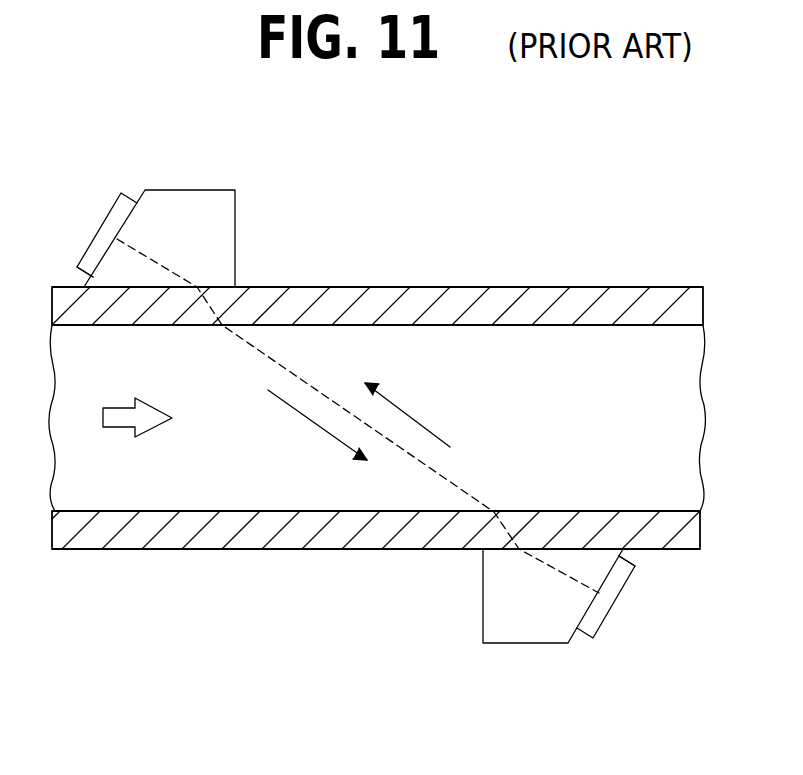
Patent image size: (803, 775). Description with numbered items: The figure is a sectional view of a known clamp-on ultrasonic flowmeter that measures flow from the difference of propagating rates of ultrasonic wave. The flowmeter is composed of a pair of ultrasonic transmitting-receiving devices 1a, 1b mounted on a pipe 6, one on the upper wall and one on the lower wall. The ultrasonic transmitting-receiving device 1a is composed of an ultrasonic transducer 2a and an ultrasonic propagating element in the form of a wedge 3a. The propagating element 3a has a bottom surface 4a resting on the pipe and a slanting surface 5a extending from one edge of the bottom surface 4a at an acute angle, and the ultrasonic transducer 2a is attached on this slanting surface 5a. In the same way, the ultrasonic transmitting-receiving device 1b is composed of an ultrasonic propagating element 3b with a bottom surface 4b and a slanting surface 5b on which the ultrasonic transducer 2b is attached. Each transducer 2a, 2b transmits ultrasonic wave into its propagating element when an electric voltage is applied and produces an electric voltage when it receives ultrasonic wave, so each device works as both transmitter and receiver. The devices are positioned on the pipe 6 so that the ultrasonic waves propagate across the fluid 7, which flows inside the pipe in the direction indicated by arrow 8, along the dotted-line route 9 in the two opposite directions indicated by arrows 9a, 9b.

The ultrasonic transmitting-receiving device 1a is at (153, 194).
The ultrasonic transmitting-receiving device 1b is at (587, 633).
The ultrasonic transducer 2a is at (113, 218).
The ultrasonic transducer 2b is at (600, 613).
The ultrasonic propagating element 3a is at (227, 207).
The ultrasonic propagating element 3b is at (532, 644).
The bottom surface 4a is at (227, 287).
The bottom surface 4b is at (497, 550).
The slanting surface 5a is at (90, 280).
The slanting surface 5b is at (623, 557).
The pipe 6 is at (541, 298).
The fluid 7 is at (594, 346).
The arrow 8 is at (115, 427).
The route 9 is at (303, 380).
The arrow 9a is at (303, 420).
The arrow 9b is at (402, 413).